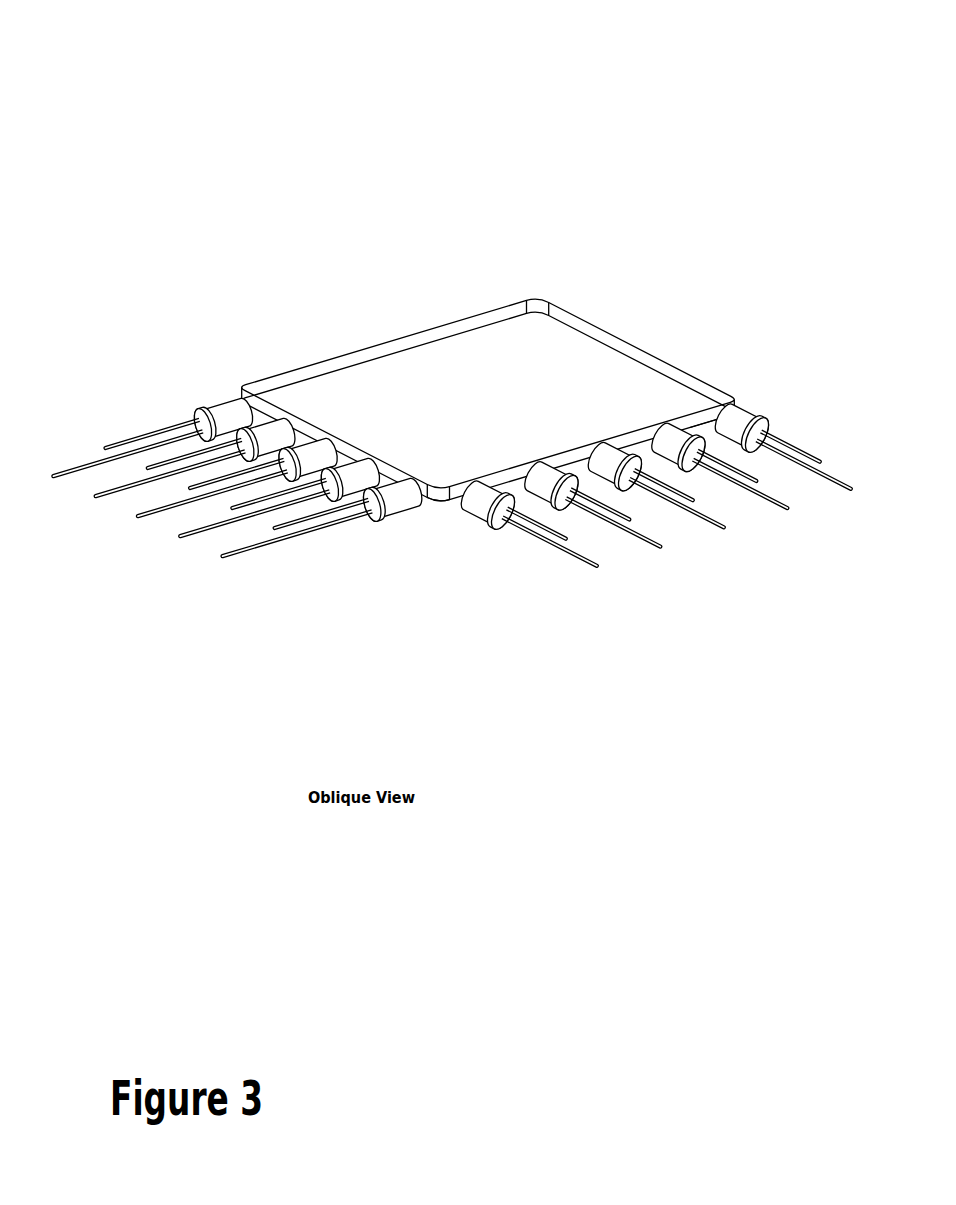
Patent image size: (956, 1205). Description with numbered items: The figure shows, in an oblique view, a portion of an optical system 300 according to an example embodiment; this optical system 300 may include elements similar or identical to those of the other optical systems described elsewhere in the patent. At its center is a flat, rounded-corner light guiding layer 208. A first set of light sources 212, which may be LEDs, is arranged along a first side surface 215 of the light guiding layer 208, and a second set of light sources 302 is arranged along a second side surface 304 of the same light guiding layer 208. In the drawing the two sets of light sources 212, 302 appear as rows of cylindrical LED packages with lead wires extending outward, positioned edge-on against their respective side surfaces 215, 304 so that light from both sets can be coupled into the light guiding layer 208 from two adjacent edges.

The optical system 300 is at (754, 84).
The light guiding layer 208 is at (645, 347).
The first set of light sources 212 is at (223, 405).
The first side surface 215 is at (422, 505).
The second set of light sources 302 is at (753, 420).
The second side surface 304 is at (708, 428).